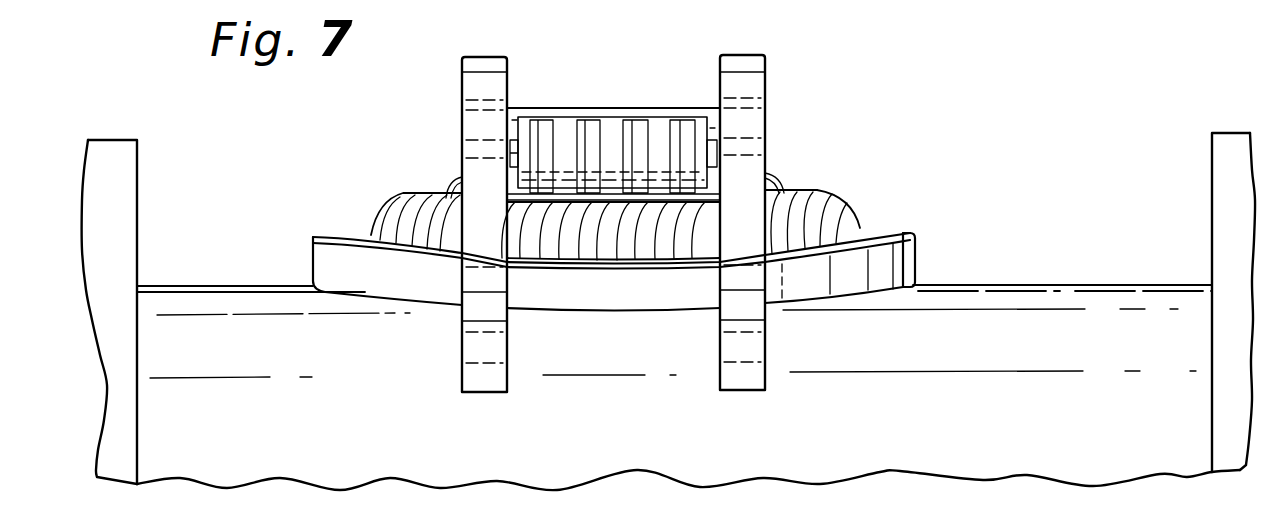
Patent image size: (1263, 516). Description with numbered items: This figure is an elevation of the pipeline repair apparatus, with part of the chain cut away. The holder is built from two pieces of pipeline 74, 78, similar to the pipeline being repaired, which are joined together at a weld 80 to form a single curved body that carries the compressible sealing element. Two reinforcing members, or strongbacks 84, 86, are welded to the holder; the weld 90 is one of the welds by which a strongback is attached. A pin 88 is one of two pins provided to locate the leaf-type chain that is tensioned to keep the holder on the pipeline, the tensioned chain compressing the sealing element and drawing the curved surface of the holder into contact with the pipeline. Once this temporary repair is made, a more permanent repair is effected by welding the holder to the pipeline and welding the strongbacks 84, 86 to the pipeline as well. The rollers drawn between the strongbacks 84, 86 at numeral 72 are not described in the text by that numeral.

The roller assembly 72 is at (643, 128).
The piece of pipeline 74 is at (857, 275).
The piece of pipeline 78 is at (803, 190).
The weld 80 is at (840, 210).
The strongback 84 is at (490, 66).
The strongback 86 is at (748, 62).
The pin 88 is at (513, 122).
The weld 90 is at (450, 181).